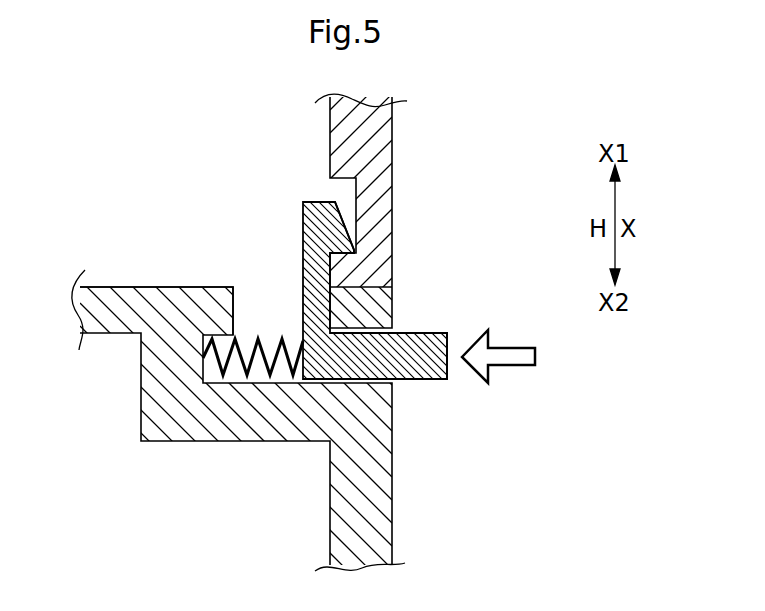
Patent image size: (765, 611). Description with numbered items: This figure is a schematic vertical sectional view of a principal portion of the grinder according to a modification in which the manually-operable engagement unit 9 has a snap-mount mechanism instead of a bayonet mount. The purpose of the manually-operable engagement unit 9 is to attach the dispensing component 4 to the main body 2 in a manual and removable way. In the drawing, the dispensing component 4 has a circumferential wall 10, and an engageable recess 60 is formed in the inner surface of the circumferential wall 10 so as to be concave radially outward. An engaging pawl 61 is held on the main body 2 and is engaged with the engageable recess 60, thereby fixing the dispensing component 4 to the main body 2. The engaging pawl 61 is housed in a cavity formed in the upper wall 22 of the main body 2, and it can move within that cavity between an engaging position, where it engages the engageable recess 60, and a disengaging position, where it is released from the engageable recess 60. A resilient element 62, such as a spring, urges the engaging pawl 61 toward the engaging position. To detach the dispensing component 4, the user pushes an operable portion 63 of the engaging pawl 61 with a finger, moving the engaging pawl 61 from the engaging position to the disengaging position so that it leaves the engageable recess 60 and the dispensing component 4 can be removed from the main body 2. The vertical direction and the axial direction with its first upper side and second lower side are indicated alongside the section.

The main body 2 is at (273, 305).
The dispensing component 4 is at (400, 185).
The manually-operable engagement unit 9 is at (299, 289).
The circumferential wall 10 is at (400, 219).
The upper wall 22 is at (155, 297).
The engageable recess 60 is at (347, 289).
The engaging pawl 61 is at (313, 231).
The resilient element 62 is at (259, 340).
The operable portion 63 is at (425, 343).